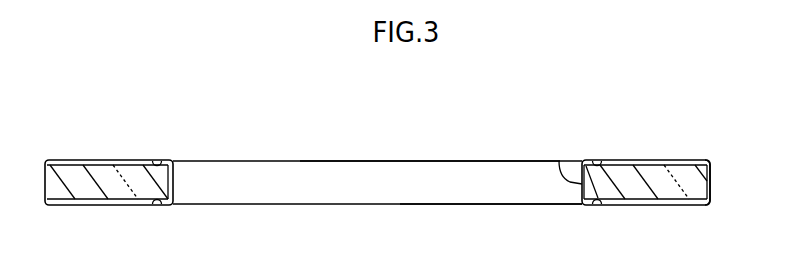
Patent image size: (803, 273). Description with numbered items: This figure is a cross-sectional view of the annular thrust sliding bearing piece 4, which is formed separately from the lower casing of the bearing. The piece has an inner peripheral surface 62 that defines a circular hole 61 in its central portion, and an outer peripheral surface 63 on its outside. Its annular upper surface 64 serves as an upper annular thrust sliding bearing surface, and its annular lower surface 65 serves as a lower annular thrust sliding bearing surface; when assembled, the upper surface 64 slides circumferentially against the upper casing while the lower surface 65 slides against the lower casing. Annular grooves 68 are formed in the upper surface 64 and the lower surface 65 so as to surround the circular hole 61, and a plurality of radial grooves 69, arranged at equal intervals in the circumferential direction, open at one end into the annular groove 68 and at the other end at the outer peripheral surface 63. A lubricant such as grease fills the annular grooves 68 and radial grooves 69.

The thrust sliding bearing piece 4 is at (402, 183).
The circular hole 61 is at (312, 181).
The inner peripheral surface 62 is at (559, 161).
The outer peripheral surface 63 is at (712, 183).
The annular upper surface 64 is at (453, 161).
The annular lower surface 65 is at (530, 205).
The annular grooves 68 is at (158, 160).
The radial grooves 69 is at (100, 160).